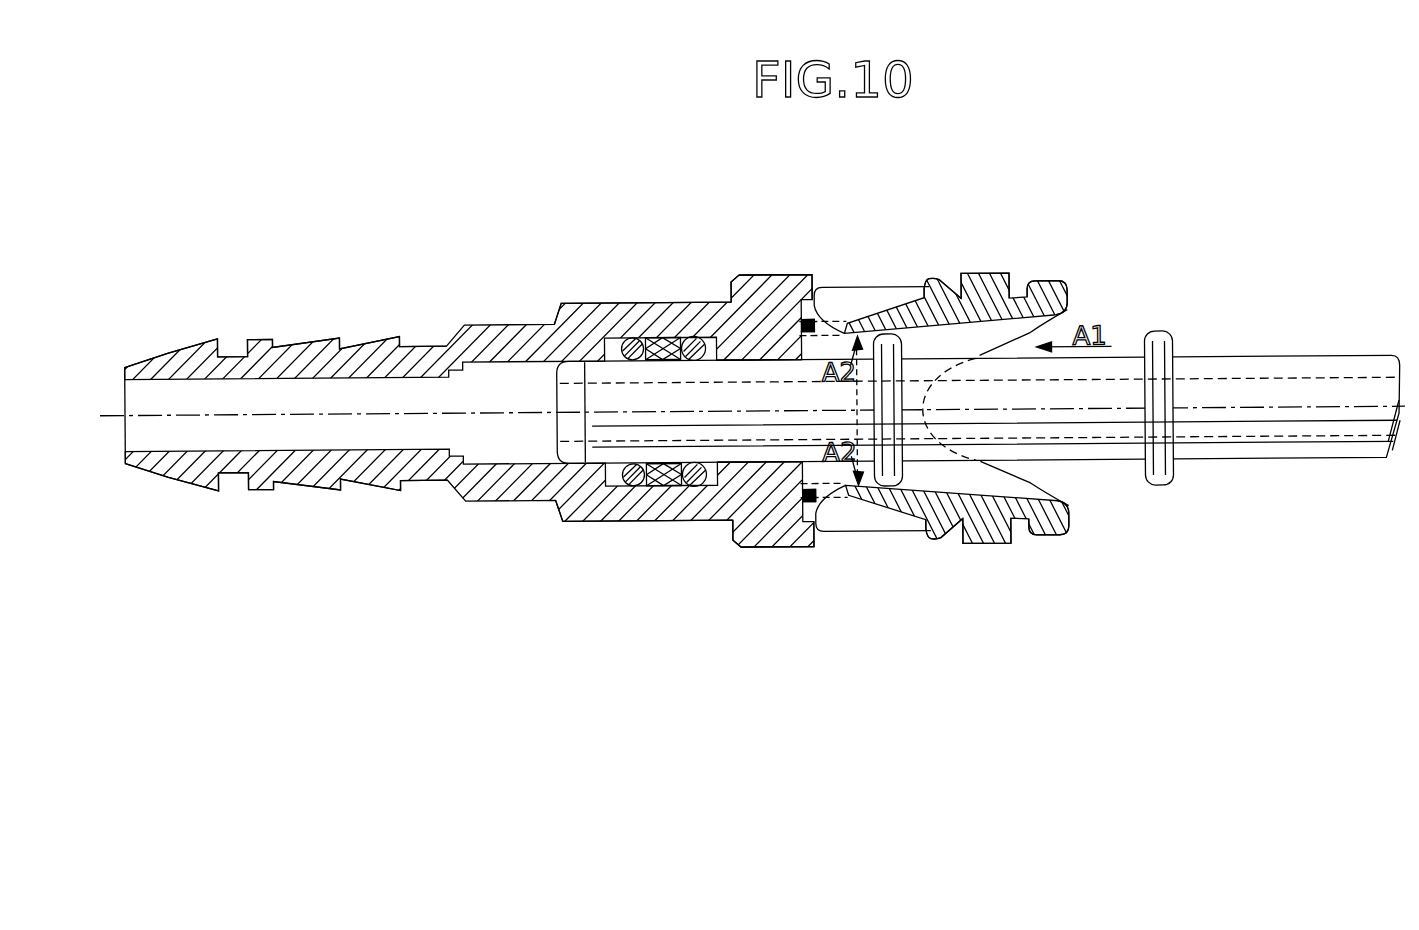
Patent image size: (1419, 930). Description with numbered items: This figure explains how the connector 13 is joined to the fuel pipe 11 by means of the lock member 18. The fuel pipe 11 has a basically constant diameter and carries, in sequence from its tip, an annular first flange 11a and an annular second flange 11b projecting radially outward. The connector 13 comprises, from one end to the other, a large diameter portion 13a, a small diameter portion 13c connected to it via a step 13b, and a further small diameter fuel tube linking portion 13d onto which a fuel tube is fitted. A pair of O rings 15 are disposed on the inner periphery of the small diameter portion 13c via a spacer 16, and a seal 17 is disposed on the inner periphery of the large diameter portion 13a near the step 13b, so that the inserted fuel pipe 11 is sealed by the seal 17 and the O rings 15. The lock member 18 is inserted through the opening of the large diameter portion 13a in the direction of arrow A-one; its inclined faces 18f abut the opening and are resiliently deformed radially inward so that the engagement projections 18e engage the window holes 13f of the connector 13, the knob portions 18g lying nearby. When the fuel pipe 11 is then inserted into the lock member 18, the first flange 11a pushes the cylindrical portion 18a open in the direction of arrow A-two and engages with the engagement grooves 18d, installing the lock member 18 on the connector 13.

The fuel pipe 11 is at (978, 369).
The first flange 11a is at (888, 302).
The second flange 11b is at (1160, 341).
The connector 13 is at (490, 316).
The large diameter portion 13a is at (763, 273).
The step 13b is at (732, 288).
The small diameter portion 13c is at (565, 300).
The fuel tube linking portion 13d is at (288, 352).
The window holes 13f is at (816, 322).
The O rings 15 is at (633, 478).
The spacer 16 is at (657, 488).
The seal 17 is at (768, 500).
The lock member 18 is at (970, 413).
The cylindrical portion 18a is at (818, 296).
The engagement grooves 18d is at (822, 335).
The engagement projections 18e is at (932, 281).
The inclined faces 18f is at (968, 275).
The knob portions 18g is at (1056, 285).